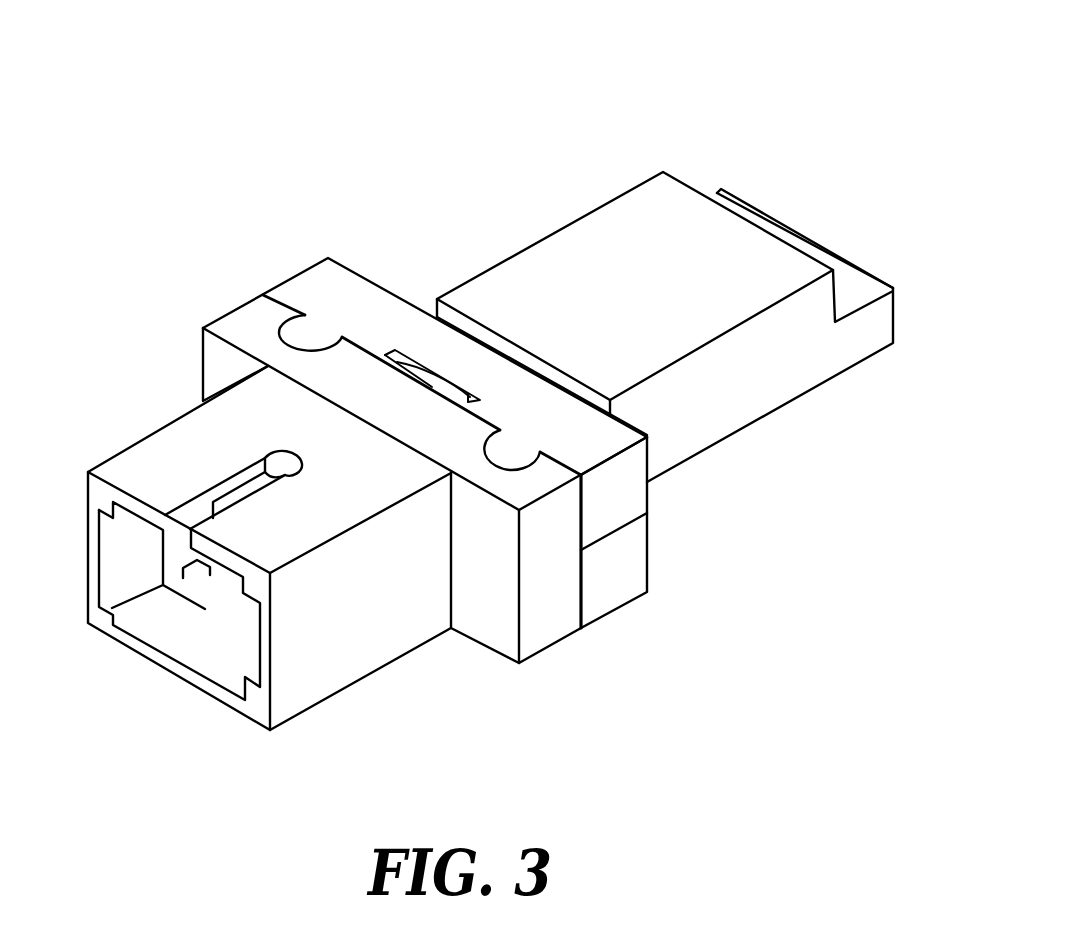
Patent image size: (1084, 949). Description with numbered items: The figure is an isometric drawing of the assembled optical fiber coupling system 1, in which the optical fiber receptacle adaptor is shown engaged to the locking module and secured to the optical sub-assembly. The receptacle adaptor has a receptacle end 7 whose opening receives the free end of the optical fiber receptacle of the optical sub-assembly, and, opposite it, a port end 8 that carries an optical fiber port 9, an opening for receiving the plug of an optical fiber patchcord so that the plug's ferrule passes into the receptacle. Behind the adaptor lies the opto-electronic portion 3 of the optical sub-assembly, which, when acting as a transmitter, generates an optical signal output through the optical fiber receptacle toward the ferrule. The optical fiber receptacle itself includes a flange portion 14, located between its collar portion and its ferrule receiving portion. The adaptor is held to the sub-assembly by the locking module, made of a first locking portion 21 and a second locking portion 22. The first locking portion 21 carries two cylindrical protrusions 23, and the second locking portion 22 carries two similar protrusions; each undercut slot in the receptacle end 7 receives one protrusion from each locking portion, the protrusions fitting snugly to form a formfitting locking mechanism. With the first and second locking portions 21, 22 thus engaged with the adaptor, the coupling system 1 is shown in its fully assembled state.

The optical fiber coupling system 1 is at (449, 149).
The opto-electronic portion 3 is at (567, 240).
The receptacle end 7 is at (238, 318).
The port end 8 is at (370, 662).
The optical fiber port 9 is at (204, 627).
The flange portion 14 is at (428, 372).
The first locking portion 21 is at (305, 282).
The second locking portion 22 is at (615, 595).
The cylindrical protrusions 23 is at (508, 448).